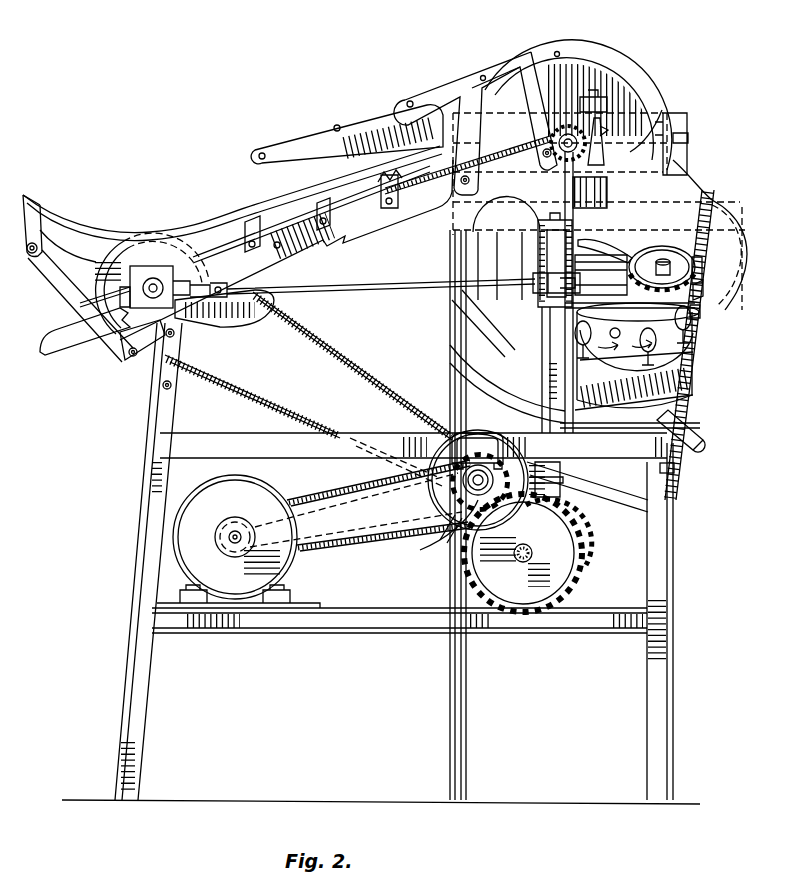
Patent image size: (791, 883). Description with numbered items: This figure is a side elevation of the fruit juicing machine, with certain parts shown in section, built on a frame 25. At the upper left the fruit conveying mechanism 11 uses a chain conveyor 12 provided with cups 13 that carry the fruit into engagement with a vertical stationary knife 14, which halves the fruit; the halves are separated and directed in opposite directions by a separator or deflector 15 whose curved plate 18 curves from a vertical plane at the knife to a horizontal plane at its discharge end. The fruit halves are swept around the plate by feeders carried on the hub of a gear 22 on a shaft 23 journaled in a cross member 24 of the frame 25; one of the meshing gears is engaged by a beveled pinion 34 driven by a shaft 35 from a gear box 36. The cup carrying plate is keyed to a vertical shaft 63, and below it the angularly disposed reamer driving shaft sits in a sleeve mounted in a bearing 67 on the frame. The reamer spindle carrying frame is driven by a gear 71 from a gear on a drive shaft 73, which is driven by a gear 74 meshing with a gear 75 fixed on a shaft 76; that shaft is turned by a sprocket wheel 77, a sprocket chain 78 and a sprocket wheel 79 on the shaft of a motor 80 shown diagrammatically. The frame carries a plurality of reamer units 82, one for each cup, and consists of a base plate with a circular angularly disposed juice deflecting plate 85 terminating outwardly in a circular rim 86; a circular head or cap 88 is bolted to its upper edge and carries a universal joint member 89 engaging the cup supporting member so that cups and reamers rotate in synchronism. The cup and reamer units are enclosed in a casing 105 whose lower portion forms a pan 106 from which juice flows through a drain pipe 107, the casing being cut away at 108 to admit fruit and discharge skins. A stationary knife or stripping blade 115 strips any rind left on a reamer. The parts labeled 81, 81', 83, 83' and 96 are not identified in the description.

The fruit conveying mechanism 11 is at (231, 205).
The chain conveyor 12 is at (569, 132).
The cups 13 is at (606, 160).
The vertical stationary knife 14 is at (400, 127).
The separator or deflector 15 is at (645, 157).
The curved plate 18 is at (712, 218).
The gear 22 is at (703, 268).
The shaft 23 is at (662, 262).
The cross member 24 is at (700, 292).
The frame 25 is at (160, 447).
The beveled pinion 34 is at (622, 275).
The shaft 35 is at (413, 285).
The gear box 36 is at (153, 272).
The vertical shaft 63 is at (580, 128).
The bearing 67 is at (570, 477).
The gear 71 is at (598, 530).
The drive shaft 73 is at (523, 562).
The gear 74 is at (580, 570).
The gear 75 is at (435, 486).
The shaft 76 is at (468, 492).
The sprocket wheel 77 is at (442, 530).
The sprocket chain 78 is at (351, 547).
The sprocket wheel 79 is at (230, 542).
The motor 80 is at (238, 541).
The hopper drum 81 is at (151, 292).
The scraper blade 81' is at (85, 275).
The reamer units 82 is at (635, 369).
The diagonal brace 83 is at (308, 389).
The brace 83' is at (440, 551).
The juice deflecting plate 85 is at (700, 383).
The circular rim 86 is at (690, 400).
The circular head or cap 88 is at (575, 356).
The universal joint member 89 is at (568, 313).
The roller 96 is at (576, 333).
The casing 105 is at (458, 264).
The pan 106 is at (462, 372).
The drain pipe 107 is at (700, 440).
The cut away 108 is at (742, 306).
The knife or stripping blade 115 is at (695, 312).